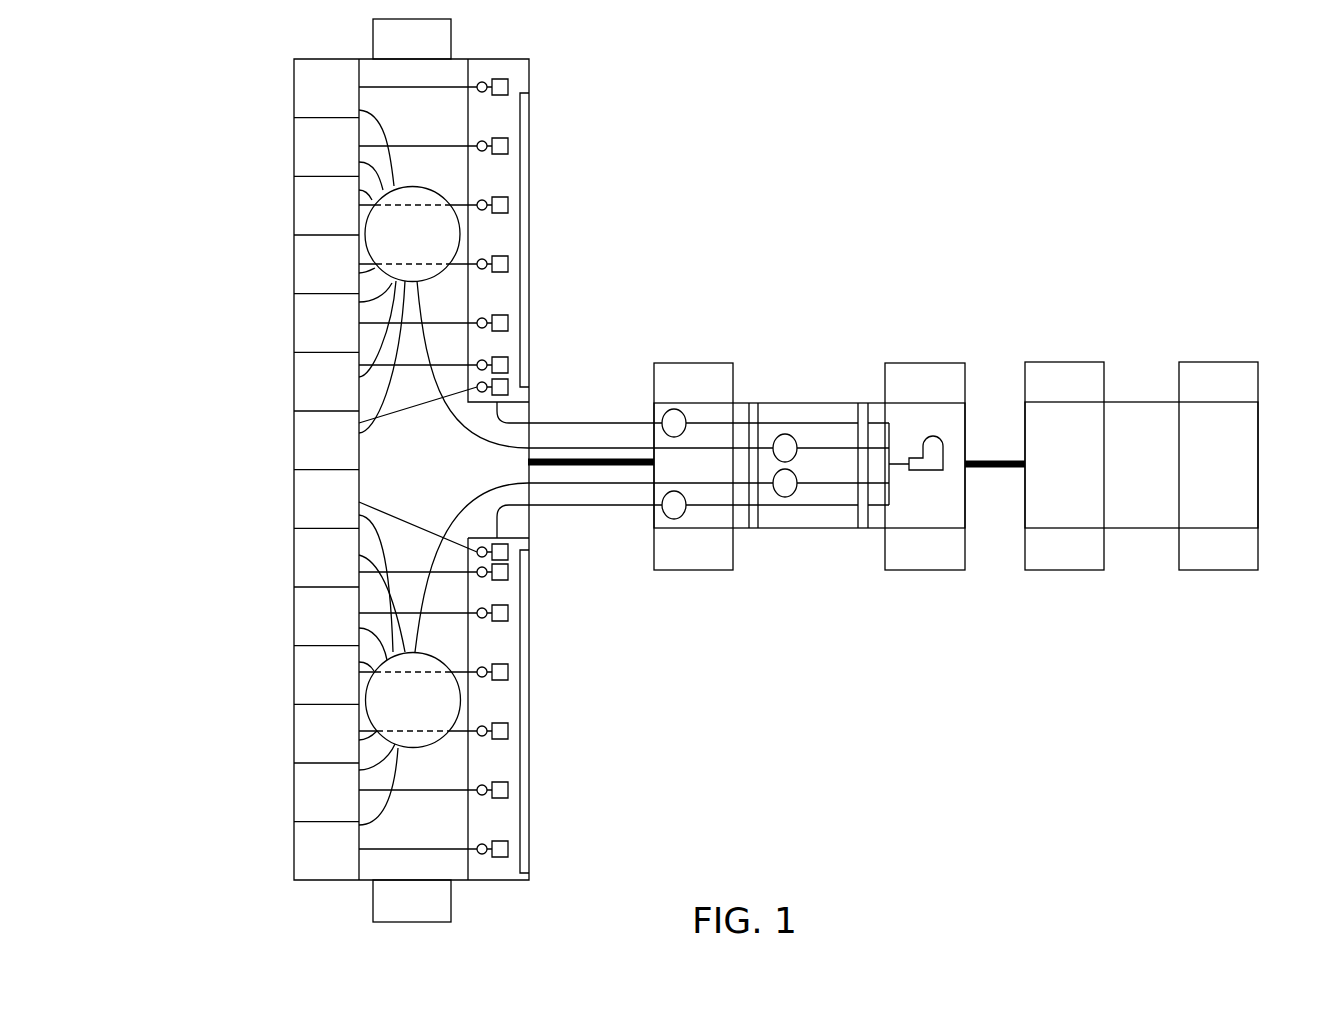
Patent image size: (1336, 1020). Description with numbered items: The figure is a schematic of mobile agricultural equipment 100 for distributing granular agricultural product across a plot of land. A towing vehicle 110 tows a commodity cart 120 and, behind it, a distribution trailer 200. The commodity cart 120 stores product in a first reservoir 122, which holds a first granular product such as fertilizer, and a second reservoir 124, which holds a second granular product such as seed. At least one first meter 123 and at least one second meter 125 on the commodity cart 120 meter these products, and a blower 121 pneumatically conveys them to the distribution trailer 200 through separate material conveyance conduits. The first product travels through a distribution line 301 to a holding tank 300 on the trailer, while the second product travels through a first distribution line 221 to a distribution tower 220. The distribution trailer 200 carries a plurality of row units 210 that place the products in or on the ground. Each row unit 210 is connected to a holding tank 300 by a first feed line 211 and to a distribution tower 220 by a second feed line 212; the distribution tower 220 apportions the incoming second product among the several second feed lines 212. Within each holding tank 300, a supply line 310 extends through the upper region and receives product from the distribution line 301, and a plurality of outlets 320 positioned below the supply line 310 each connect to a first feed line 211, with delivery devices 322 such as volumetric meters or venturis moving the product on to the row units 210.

The mobile agricultural equipment 100 is at (1029, 100).
The towing vehicle 110 is at (1136, 302).
The commodity cart 120 is at (784, 302).
The blower 121 is at (935, 471).
The first reservoir 122 is at (741, 403).
The first meter 123 is at (686, 420).
The second reservoir 124 is at (815, 403).
The second meter 125 is at (797, 444).
The distribution trailer 200 is at (185, 79).
The row unit 210 is at (294, 88).
The first feed line 211 is at (447, 90).
The second feed line 212 is at (390, 132).
The distribution tower 220 is at (368, 250).
The first distribution line 221 is at (460, 432).
The holding tank 300 is at (543, 222).
The distribution line 301 is at (577, 422).
The supply line 310 is at (525, 142).
The outlet 320 is at (481, 81).
The delivery device 322 is at (508, 84).